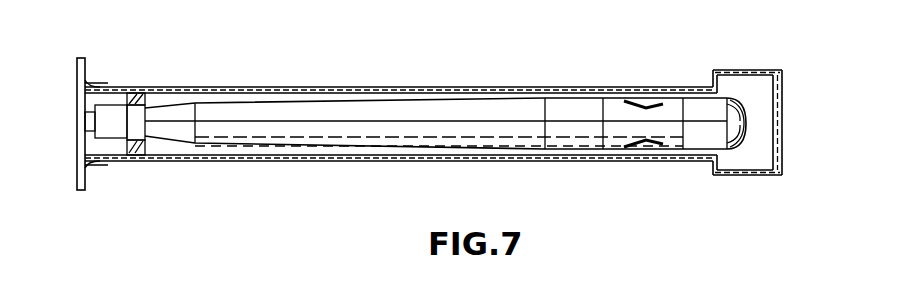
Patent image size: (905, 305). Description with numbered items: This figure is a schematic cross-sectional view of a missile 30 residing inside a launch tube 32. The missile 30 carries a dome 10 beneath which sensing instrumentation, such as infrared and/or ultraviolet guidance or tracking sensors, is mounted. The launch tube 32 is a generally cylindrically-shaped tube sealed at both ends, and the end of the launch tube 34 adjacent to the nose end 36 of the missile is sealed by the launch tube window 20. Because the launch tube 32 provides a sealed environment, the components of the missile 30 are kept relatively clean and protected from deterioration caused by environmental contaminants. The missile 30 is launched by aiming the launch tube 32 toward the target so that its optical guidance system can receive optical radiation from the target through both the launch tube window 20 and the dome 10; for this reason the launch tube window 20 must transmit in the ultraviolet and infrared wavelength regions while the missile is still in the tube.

The dome 10 is at (737, 108).
The launch tube window 20 is at (780, 152).
The missile 30 is at (473, 110).
The launch tube 32 is at (376, 86).
The end of the launch tube 34 is at (737, 70).
The nose end of the missile 36 is at (718, 177).